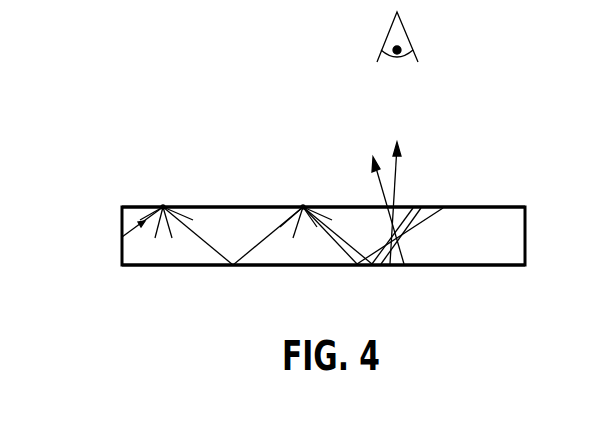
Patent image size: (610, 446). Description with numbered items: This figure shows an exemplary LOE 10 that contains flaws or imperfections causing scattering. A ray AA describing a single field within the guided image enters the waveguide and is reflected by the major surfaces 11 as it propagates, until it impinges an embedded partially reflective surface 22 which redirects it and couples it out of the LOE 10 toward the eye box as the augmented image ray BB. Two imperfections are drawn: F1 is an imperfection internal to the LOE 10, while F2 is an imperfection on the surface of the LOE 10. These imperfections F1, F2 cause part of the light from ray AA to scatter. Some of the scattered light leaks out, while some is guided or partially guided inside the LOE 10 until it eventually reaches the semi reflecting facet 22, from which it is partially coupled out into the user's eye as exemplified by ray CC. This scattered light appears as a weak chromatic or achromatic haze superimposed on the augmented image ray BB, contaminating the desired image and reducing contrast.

The LOE 10 is at (258, 212).
The major surface 11 is at (507, 203).
The partially reflective surface 22 is at (398, 253).
The ray AA is at (122, 231).
The imperfection F1 is at (303, 206).
The imperfection F2 is at (163, 204).
The augmented image ray BB is at (400, 185).
The ray CC is at (383, 186).